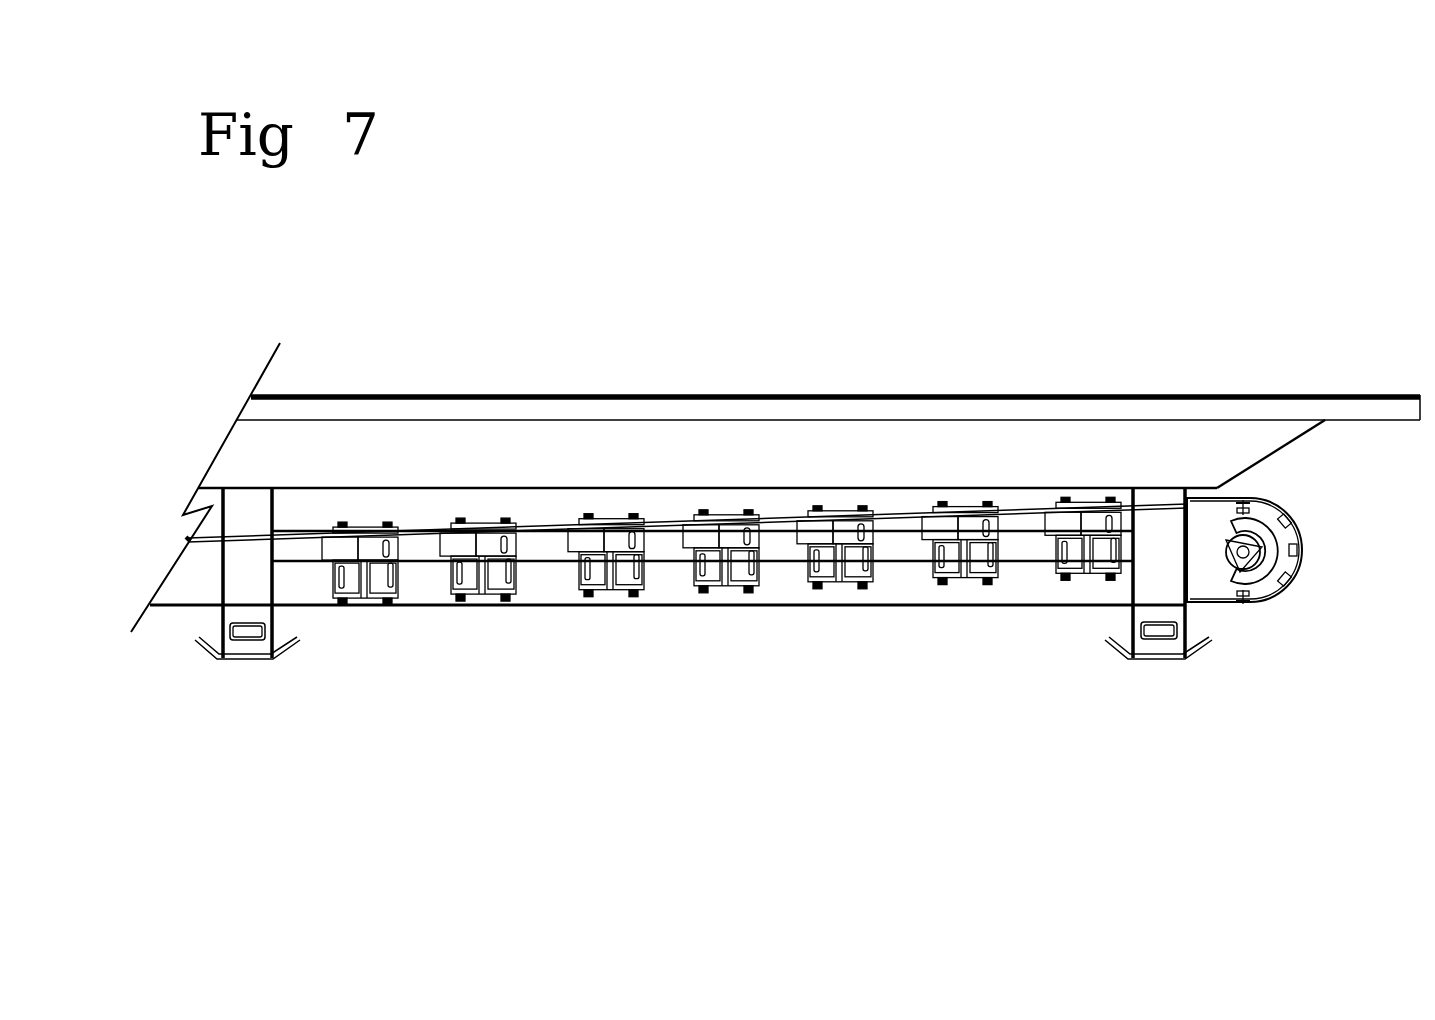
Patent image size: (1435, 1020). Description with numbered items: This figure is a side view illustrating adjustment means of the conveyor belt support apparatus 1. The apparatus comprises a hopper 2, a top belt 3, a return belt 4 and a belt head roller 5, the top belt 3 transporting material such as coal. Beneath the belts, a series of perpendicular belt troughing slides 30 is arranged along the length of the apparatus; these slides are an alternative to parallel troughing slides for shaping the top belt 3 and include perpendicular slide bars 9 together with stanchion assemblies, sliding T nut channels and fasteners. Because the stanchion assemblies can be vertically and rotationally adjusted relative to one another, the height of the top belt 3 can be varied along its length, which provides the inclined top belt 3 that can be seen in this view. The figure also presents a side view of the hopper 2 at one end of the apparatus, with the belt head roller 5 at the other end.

The conveyor belt support apparatus 1 is at (663, 395).
The hopper 2 is at (873, 408).
The top belt 3 is at (212, 543).
The return belt 4 is at (1093, 613).
The belt head roller 5 is at (1270, 585).
The perpendicular slide bars 9 is at (337, 548).
The perpendicular belt troughing slides 30 is at (585, 598).